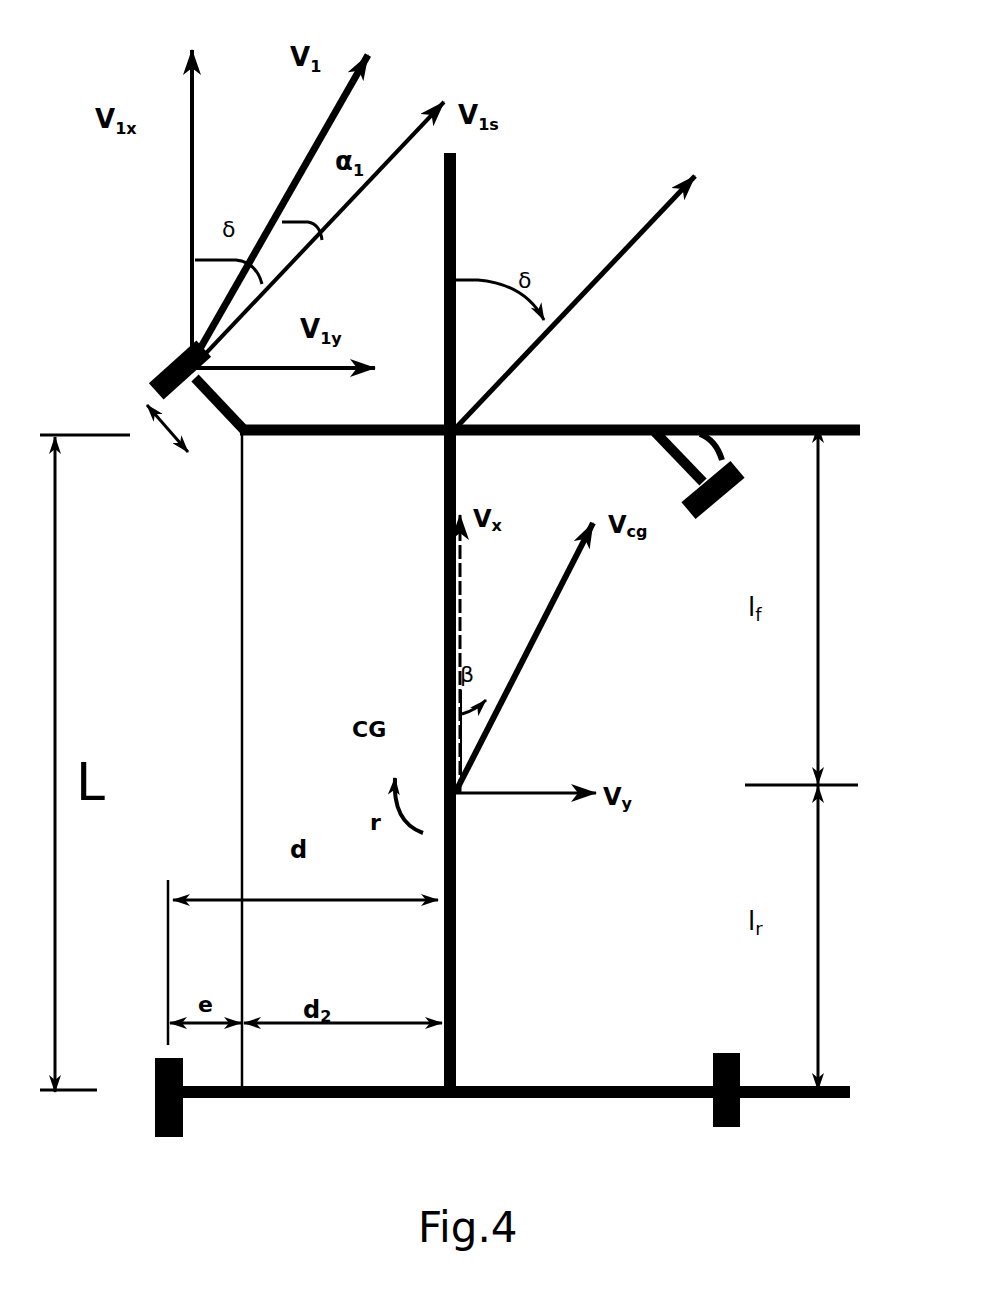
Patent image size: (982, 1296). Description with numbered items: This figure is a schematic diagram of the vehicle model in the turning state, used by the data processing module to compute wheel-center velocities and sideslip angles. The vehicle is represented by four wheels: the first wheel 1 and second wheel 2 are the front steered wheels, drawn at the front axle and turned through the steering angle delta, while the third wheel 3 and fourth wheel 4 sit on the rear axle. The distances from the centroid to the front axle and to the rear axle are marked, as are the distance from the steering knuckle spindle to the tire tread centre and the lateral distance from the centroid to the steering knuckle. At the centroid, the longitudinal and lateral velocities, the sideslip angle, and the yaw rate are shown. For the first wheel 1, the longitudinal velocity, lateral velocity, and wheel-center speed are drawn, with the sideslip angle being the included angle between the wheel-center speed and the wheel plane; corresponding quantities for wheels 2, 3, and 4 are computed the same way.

The first wheel 1 is at (179, 396).
The second wheel 2 is at (710, 483).
The third wheel 3 is at (152, 1091).
The fourth wheel 4 is at (726, 1074).